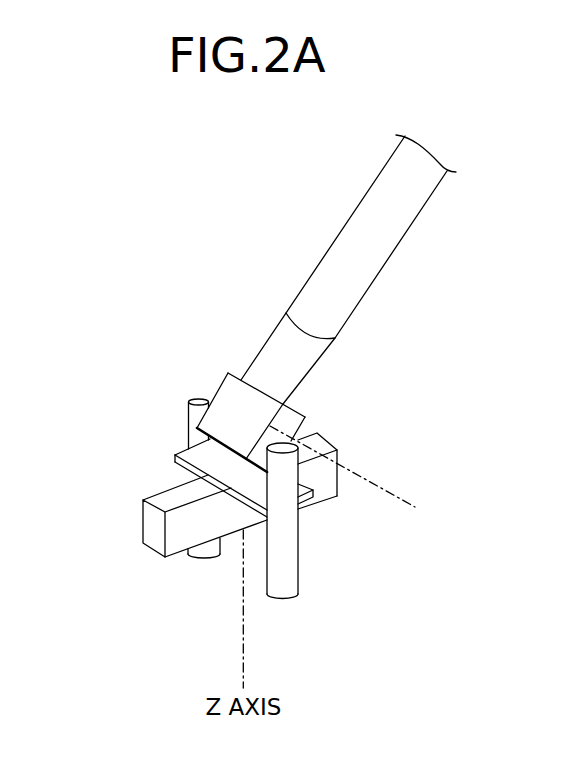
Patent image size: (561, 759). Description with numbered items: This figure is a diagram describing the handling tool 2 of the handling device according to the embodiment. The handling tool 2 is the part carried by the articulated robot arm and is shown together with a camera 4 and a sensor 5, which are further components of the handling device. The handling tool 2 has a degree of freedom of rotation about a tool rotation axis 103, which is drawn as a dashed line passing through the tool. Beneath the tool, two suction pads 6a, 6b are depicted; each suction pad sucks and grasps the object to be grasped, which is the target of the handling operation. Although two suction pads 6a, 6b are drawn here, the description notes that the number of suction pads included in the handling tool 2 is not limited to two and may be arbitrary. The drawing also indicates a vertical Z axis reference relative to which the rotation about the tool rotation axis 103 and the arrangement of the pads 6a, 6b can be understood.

The handling tool 2 is at (225, 393).
The camera 4 is at (143, 512).
The sensor 5 is at (277, 342).
The suction pad 6a is at (203, 555).
The suction pad 6b is at (284, 596).
The tool rotation axis 103 is at (382, 491).